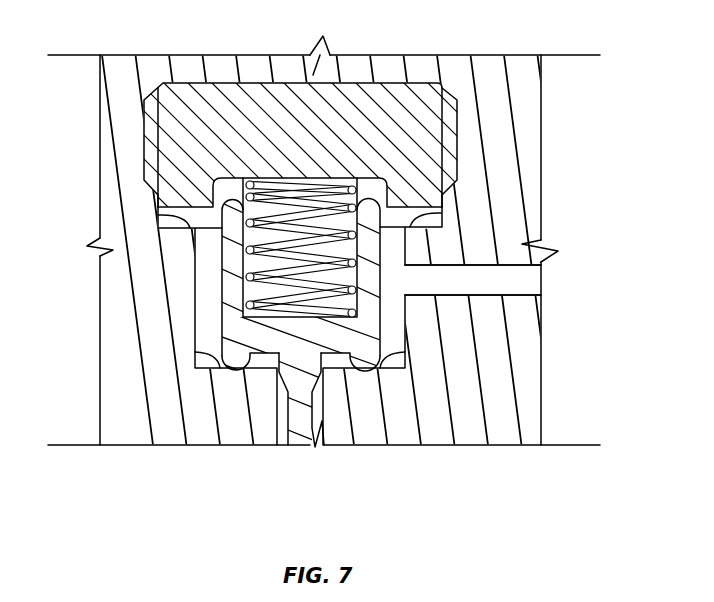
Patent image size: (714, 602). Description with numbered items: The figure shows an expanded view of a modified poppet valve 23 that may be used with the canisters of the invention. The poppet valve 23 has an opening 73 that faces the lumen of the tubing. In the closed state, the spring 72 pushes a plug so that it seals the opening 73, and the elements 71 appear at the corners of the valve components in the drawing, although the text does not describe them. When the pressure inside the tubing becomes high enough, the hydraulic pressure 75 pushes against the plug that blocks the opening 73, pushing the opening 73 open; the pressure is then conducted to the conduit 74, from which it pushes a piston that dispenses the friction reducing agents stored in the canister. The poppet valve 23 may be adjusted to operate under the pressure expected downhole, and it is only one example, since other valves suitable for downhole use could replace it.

The poppet valve 23 is at (196, 82).
The seals 71 is at (158, 212).
The spring 72 is at (268, 255).
The opening 73 is at (322, 432).
The conduit 74 is at (527, 278).
The hydraulic pressure 75 is at (302, 421).